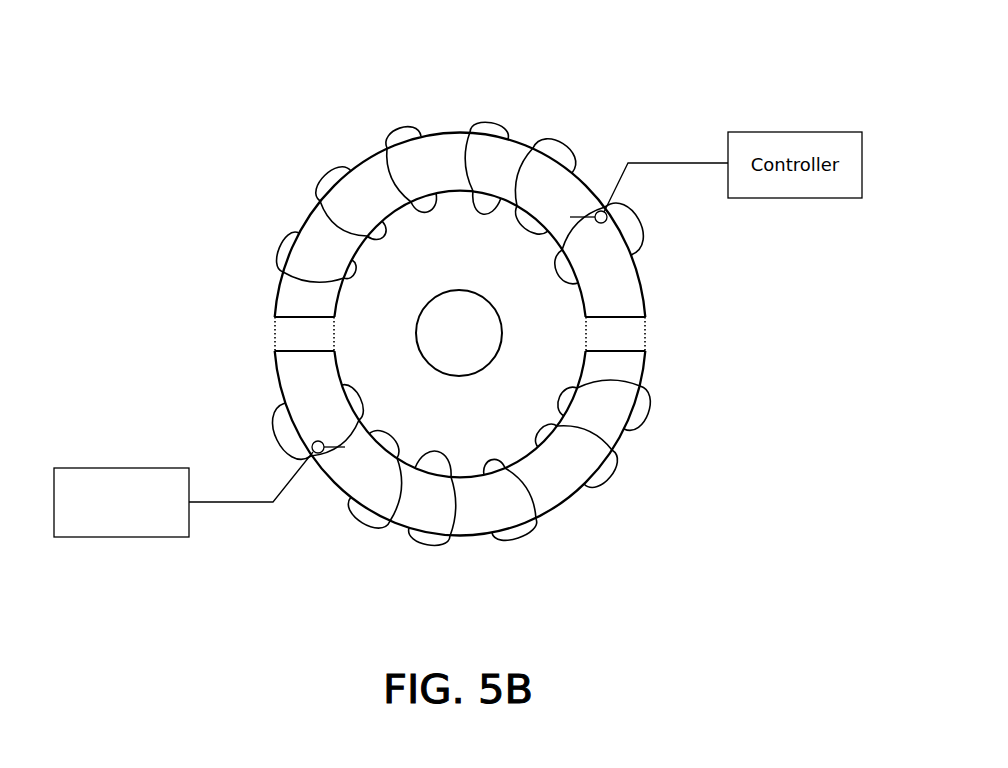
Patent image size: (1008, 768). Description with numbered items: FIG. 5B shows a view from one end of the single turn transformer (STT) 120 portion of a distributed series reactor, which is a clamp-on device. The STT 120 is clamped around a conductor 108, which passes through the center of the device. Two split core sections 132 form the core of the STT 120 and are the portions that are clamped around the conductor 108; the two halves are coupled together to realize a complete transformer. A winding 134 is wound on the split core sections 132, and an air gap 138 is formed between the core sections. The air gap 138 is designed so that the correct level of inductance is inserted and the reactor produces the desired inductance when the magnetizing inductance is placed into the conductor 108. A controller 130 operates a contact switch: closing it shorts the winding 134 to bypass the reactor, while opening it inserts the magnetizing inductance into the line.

The single turn transformer (STT) 120 is at (343, 92).
The split core sections 132 is at (460, 174).
The winding 134 is at (543, 137).
The air gap 138 is at (610, 333).
The conductor 108 is at (478, 343).
The controller 130 is at (173, 537).